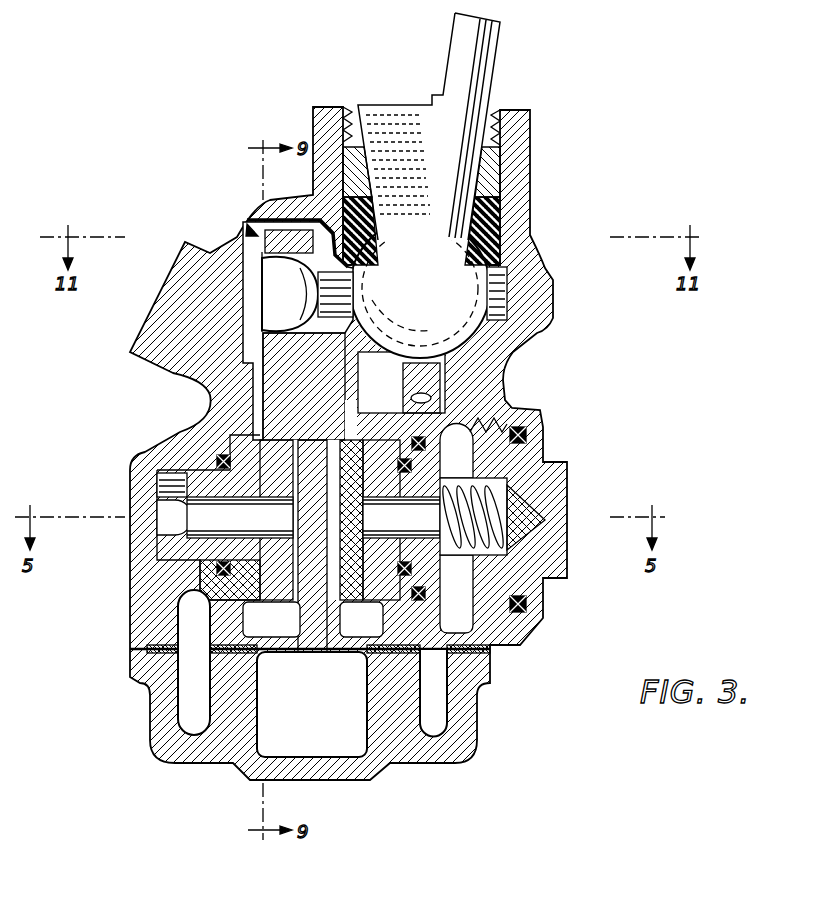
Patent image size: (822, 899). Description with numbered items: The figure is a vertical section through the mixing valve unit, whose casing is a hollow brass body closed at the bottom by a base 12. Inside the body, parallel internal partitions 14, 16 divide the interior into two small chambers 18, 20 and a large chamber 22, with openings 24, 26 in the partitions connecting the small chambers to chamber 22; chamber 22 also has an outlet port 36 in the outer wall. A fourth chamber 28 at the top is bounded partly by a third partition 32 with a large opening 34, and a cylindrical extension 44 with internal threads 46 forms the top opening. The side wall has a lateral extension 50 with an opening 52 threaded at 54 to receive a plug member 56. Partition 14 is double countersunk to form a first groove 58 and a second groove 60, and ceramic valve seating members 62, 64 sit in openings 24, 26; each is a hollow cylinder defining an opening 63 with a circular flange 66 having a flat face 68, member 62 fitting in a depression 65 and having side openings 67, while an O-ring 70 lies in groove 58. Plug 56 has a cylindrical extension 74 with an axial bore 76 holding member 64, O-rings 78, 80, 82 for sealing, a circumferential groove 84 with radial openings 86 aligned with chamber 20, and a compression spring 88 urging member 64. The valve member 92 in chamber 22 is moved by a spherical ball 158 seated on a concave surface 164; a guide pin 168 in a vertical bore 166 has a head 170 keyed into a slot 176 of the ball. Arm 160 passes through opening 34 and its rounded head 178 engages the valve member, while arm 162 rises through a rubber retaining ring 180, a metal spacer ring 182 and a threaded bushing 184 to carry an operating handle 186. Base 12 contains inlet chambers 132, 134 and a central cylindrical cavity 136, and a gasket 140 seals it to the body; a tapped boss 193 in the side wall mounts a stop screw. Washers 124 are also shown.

The base 12 is at (153, 722).
The internal partition 14 is at (217, 625).
The internal partition 16 is at (497, 650).
The chamber 18 is at (170, 463).
The chamber 20 is at (520, 646).
The chamber 22 is at (170, 385).
The opening 24 is at (215, 566).
The opening 26 is at (540, 411).
The fourth chamber 28 is at (553, 302).
The third internal partition 32 is at (333, 235).
The opening 34 is at (373, 268).
The outlet port 36 is at (185, 274).
The cylindrical extension 44 is at (530, 176).
The internal threads 46 is at (503, 132).
The lateral extension 50 is at (522, 637).
The opening 52 is at (545, 622).
The threads 54 is at (497, 420).
The plug member 56 is at (553, 480).
The first groove 58 is at (210, 433).
The second groove 60 is at (210, 420).
The valve seating member 62 is at (225, 517).
The opening 63 is at (188, 517).
The valve seating member 64 is at (370, 520).
The depression 65 is at (160, 515).
The circular flange 66 is at (313, 619).
The side openings 67 is at (170, 485).
The flat faces 68 is at (275, 440).
The O-ring 70 is at (210, 575).
The cylindrical extension 74 is at (422, 626).
The axial bore 76 is at (513, 530).
The O-ring 78 is at (545, 597).
The O-ring 80 is at (430, 600).
The O-ring 82 is at (418, 548).
The circumferential groove 84 is at (535, 448).
The radial openings 86 is at (527, 437).
The compression spring 88 is at (520, 512).
The valve member 92 is at (238, 210).
The washer 124 is at (313, 517).
The chamber 132 is at (190, 686).
The chamber 134 is at (440, 716).
The cylindrical cavity 136 is at (272, 762).
The gasket 140 is at (478, 690).
The spherical ball 158 is at (553, 273).
The arm 160 is at (356, 300).
The arm 162 is at (440, 118).
The concave surface 164 is at (535, 342).
The vertical bore 166 is at (432, 396).
The guide pin 168 is at (447, 386).
The head 170 is at (380, 315).
The slot 176 is at (497, 305).
The rounded head 178 is at (280, 293).
The retaining ring 180 is at (493, 232).
The spacer ring 182 is at (493, 182).
The threaded bushing 184 is at (355, 107).
The operating handle 186 is at (456, 32).
The tapped boss 193 is at (540, 325).